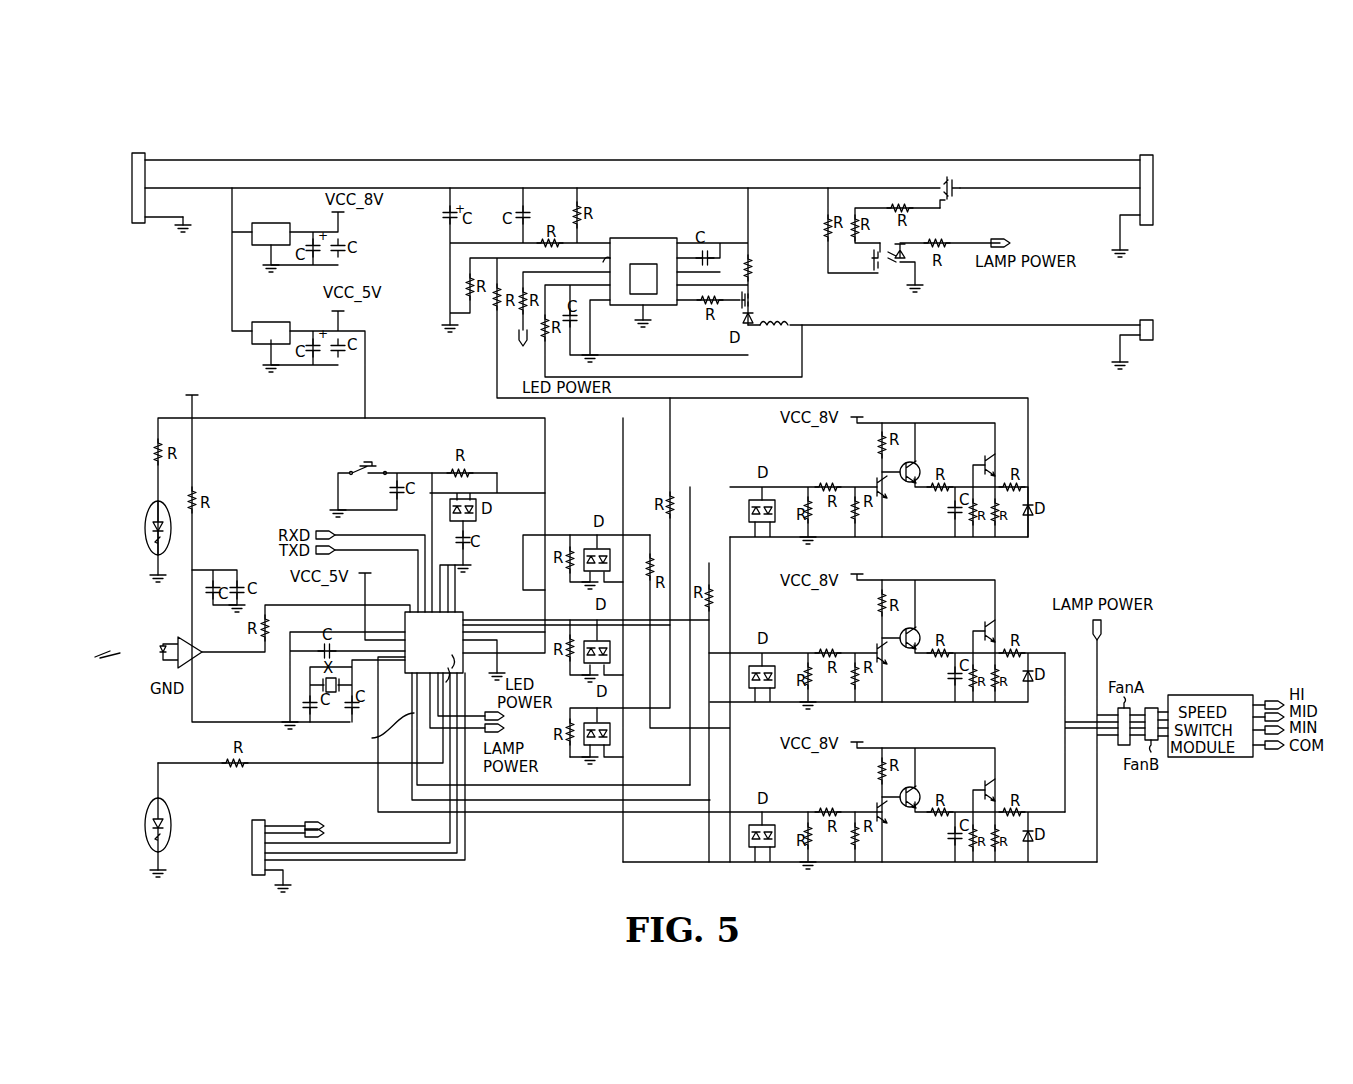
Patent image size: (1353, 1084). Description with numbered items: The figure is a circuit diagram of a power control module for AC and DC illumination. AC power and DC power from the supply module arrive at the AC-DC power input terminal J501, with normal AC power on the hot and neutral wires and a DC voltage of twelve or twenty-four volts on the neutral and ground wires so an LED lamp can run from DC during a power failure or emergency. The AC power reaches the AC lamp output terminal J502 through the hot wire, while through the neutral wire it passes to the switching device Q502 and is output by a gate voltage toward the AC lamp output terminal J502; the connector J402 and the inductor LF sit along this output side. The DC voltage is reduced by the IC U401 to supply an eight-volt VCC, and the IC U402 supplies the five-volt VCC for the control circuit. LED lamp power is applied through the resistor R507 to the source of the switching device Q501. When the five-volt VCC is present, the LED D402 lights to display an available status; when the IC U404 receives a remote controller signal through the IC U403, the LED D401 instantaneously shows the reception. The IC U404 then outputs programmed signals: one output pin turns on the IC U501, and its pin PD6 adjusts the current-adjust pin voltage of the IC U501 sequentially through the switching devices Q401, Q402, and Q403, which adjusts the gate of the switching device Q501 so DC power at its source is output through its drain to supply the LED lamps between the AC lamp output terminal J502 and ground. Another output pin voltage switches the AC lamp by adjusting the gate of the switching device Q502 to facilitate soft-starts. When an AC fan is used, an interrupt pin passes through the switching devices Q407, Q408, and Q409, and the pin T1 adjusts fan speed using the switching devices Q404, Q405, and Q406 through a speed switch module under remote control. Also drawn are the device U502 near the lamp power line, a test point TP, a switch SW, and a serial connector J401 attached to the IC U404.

The AC-DC power input terminal J501 is at (153, 165).
The CON3 connector J402 is at (1148, 183).
The AC lamp output terminal J502 is at (1148, 322).
The IC U401 is at (278, 223).
The IC U402 is at (278, 321).
The IC U501 is at (640, 259).
The lamp power switching device U502 is at (881, 268).
The resistor R507 is at (769, 268).
The switching device Q501 is at (769, 304).
The switching device Q502 is at (969, 188).
The inductor LF is at (944, 336).
The test point TP is at (266, 548).
The LED D402 is at (130, 520).
The LED D401 is at (140, 820).
The IC U403 is at (181, 643).
The IC U404 is at (434, 647).
The pin T1 is at (397, 685).
The pin PD6 is at (373, 731).
The switch SW is at (417, 477).
The serial connector J401/A S07A J401 is at (306, 832).
The switching device Q401 is at (860, 480).
The switching device Q402 is at (910, 486).
The switching device Q403 is at (969, 456).
The switching device Q404 is at (860, 641).
The switching device Q405 is at (910, 652).
The switching device Q406 is at (969, 622).
The switching device Q407 is at (857, 805).
The switching device Q408 is at (910, 811).
The switching device Q409 is at (969, 781).